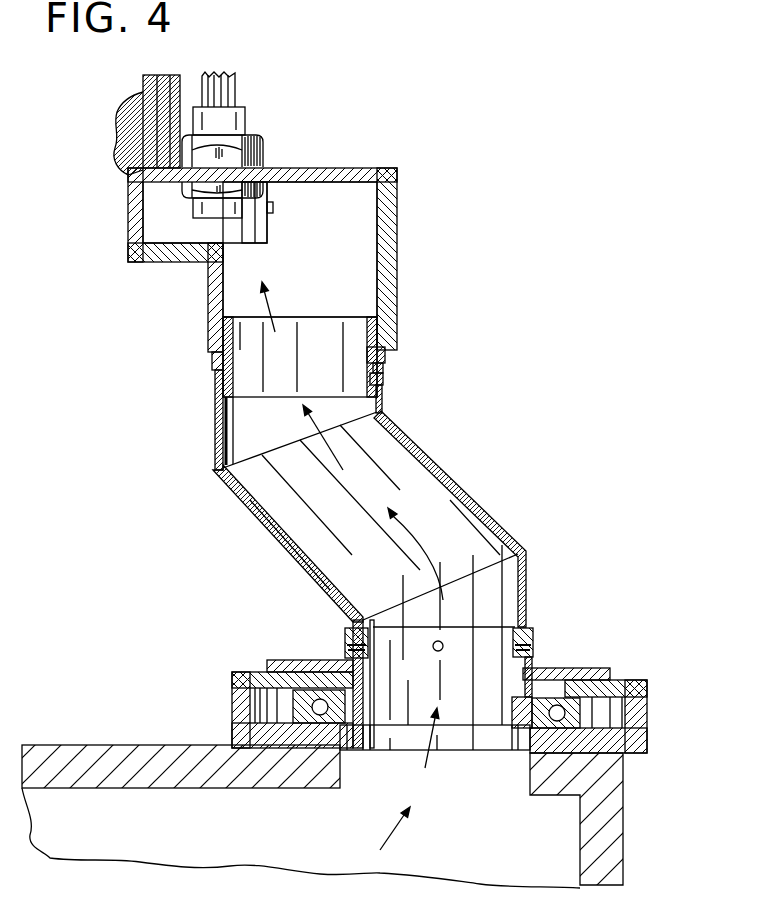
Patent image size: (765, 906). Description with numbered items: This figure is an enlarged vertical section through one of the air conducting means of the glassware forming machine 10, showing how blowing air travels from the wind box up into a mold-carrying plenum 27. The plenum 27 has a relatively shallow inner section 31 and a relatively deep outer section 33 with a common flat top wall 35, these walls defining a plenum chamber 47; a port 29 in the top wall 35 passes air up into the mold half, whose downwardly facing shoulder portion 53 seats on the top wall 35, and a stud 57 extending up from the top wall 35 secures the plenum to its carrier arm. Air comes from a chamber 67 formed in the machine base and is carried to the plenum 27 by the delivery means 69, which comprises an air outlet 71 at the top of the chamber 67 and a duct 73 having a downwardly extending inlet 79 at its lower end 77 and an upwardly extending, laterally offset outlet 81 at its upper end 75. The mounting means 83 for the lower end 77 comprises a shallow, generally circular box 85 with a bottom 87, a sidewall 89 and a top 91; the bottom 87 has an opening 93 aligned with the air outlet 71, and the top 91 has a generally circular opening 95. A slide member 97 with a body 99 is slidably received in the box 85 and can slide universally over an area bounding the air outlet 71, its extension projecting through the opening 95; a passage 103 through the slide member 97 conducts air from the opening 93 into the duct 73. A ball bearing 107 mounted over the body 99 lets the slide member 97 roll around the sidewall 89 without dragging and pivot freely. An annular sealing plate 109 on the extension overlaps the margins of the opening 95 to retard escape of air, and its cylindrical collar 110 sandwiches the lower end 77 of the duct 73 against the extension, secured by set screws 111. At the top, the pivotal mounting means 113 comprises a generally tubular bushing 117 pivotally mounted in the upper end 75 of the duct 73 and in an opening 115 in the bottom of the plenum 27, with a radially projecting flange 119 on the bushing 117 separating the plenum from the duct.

The apparatus 10 is at (372, 658).
The plenum 27 is at (406, 166).
The ports 29 is at (158, 182).
The inner section 31 is at (172, 262).
The outer section 33 is at (398, 266).
The top wall 35 is at (307, 168).
The plenum chamber 47 is at (365, 227).
The shoulder portion 53 is at (135, 150).
The stud 57 is at (237, 98).
The chamber 67 is at (565, 858).
The air delivery means 69 is at (490, 504).
The air outlet 71 is at (380, 810).
The duct 73 is at (281, 548).
The upper end 75 is at (385, 401).
The lower end 77 is at (542, 671).
The inlet 79 is at (457, 670).
The outlet 81 is at (286, 385).
The mounting means 83 is at (268, 629).
The box 85 is at (185, 372).
The bottom 87 is at (385, 353).
The sidewalls 89 is at (236, 712).
The top 91 is at (268, 666).
The opening 93 is at (523, 756).
The opening 95 is at (596, 691).
The slide member 97 is at (368, 704).
The body 99 is at (346, 742).
The passage 103 is at (470, 750).
The ball bearing 107 is at (582, 721).
The sealing plate 109 is at (568, 684).
The cylindrical collar 110 is at (531, 640).
The set screws 111 is at (537, 664).
The pivotal mounting means 113 is at (200, 393).
The opening 115 is at (207, 343).
The bushing 117 is at (385, 369).
The flange 119 is at (385, 379).